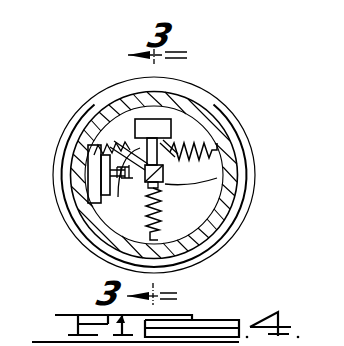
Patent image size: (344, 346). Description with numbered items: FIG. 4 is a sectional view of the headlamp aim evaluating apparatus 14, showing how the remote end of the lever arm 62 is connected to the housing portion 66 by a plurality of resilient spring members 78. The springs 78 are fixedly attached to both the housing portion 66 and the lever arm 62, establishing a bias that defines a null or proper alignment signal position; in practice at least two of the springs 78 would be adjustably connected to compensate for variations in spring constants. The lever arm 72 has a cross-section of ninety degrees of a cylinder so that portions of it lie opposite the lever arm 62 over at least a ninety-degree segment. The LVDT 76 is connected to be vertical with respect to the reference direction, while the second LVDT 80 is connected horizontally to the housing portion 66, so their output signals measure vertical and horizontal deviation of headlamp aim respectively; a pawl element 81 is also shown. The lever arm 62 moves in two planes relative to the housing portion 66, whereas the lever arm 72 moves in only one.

The brake and ratchet assembly 14 is at (263, 116).
The lever arm 62 is at (168, 181).
The housing portion 66 is at (233, 224).
The lever arm 72 is at (214, 98).
The LVDT 76 is at (134, 128).
The resilient spring members 78 is at (104, 124).
The second linear variable differential transformer (LVDT) 80 is at (128, 184).
The pawl block 81 is at (163, 142).